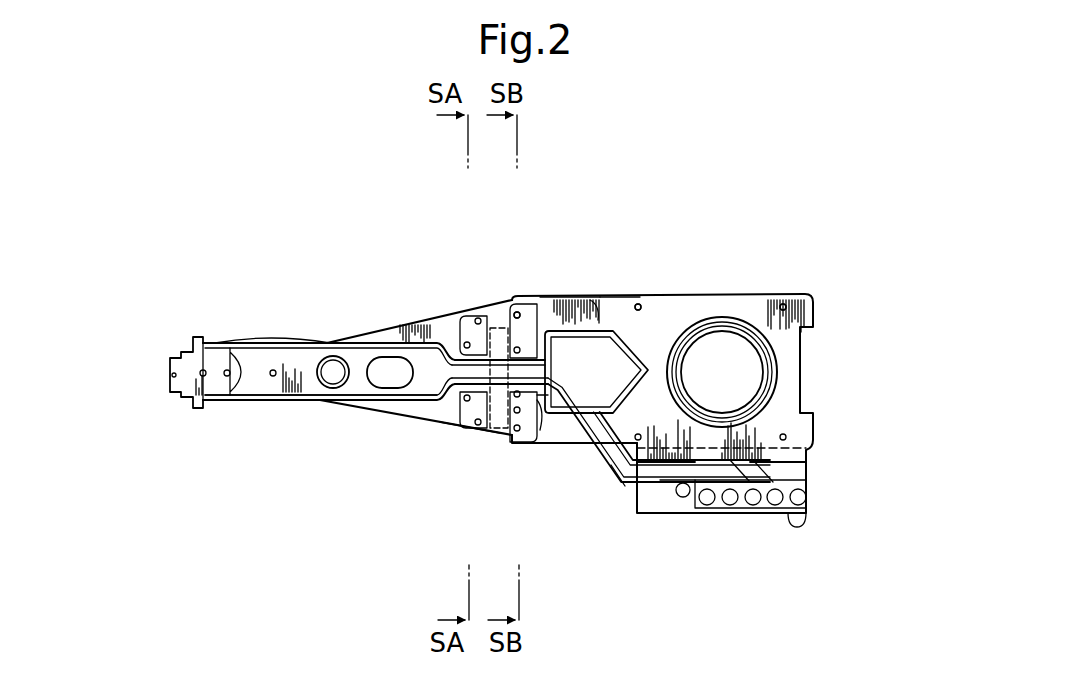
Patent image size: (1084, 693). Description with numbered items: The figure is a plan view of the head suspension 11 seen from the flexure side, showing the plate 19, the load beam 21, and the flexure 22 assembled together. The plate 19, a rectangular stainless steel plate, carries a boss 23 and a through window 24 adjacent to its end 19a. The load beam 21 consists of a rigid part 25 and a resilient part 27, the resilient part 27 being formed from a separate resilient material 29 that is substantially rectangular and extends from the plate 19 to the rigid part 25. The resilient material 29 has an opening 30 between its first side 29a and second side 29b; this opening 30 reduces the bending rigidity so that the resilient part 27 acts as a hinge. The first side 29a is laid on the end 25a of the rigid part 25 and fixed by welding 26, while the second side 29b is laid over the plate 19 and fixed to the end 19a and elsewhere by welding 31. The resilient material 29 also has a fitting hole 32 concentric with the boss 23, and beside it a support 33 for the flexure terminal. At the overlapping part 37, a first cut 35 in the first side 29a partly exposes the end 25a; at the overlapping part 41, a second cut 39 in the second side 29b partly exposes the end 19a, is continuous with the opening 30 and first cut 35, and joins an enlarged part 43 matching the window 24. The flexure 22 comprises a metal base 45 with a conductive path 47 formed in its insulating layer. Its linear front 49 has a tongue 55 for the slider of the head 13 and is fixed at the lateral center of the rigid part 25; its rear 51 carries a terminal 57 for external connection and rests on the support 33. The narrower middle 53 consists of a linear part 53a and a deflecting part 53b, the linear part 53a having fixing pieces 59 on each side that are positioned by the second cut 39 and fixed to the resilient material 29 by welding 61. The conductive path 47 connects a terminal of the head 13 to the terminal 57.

The head suspension 11 is at (707, 195).
The head 13 is at (190, 328).
The plate 19 is at (782, 290).
The end of the plate 19a is at (596, 372).
The load beam 21 is at (363, 330).
The flexure 22 is at (285, 405).
The boss 23 is at (747, 318).
The through window 24 is at (563, 297).
The rigid part 25 is at (410, 320).
The end of the rigid part 25a is at (478, 435).
The welding 26 is at (470, 316).
The resilient part 27 is at (490, 328).
The resilient material 29 is at (657, 303).
The first side of the resilient material 29a is at (468, 425).
The second side of the resilient material 29b is at (612, 300).
The opening 30 is at (503, 430).
The welding 31 is at (514, 303).
The fitting hole 32 is at (698, 345).
The support 33 is at (690, 514).
The first cut 35 is at (462, 318).
The overlapping part 37 is at (466, 432).
The second cut 39 is at (548, 300).
The overlapping part 41 is at (520, 445).
The enlarged part 43 is at (600, 300).
The metal base 45 is at (297, 333).
The conductive path 47 is at (345, 403).
The front of the metal base 49 is at (265, 338).
The rear of the flexure 51 is at (797, 479).
The middle of the flexure 53 is at (588, 445).
The linear part 53a is at (350, 399).
The deflecting part 53b is at (582, 444).
The tongue 55 is at (218, 385).
The terminal 57 is at (762, 514).
The fixing piece 59 is at (547, 402).
The welding 61 is at (532, 442).